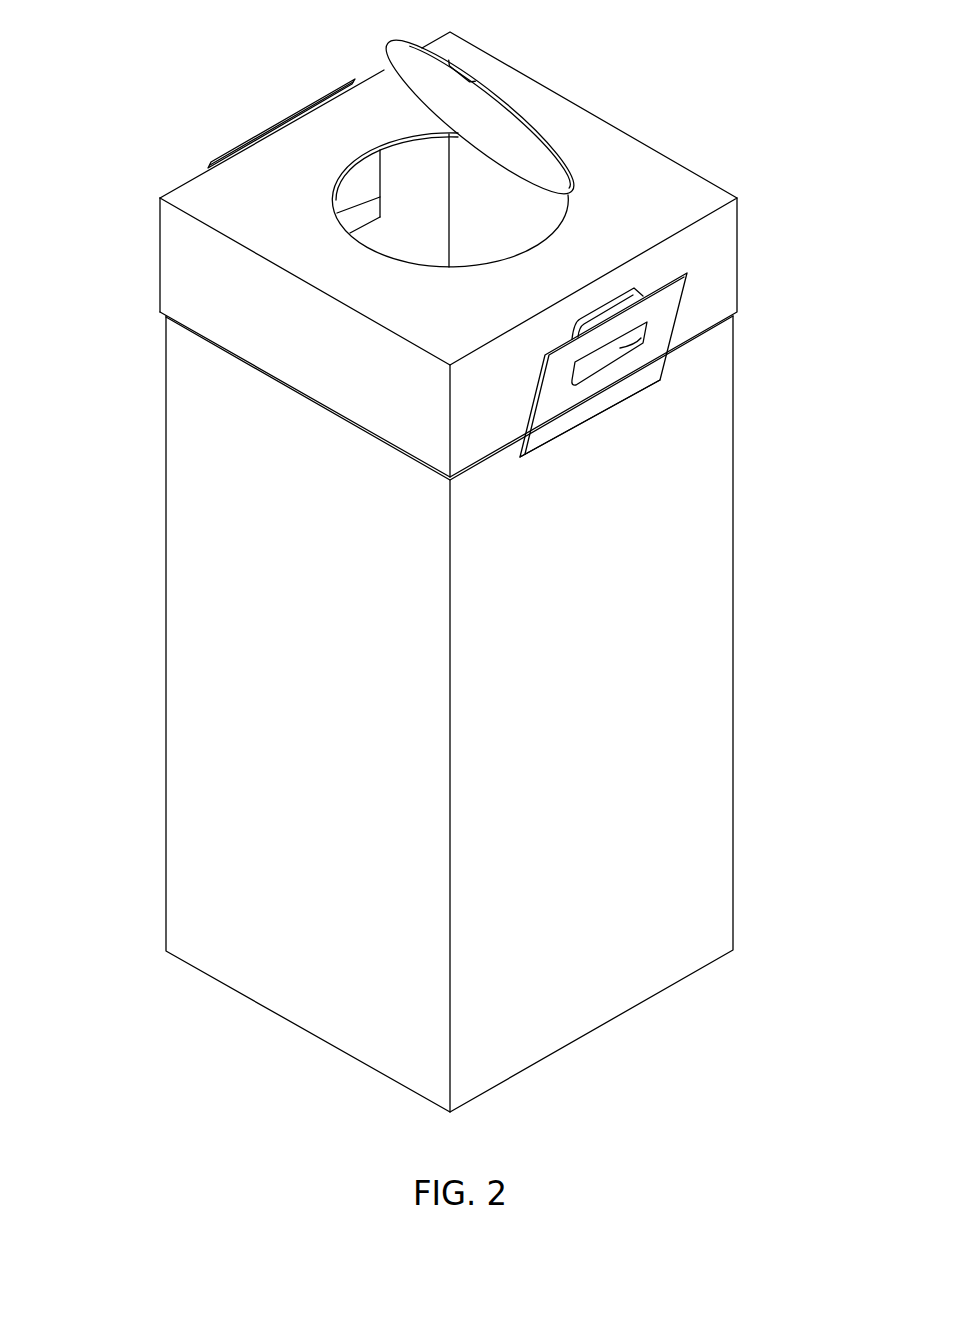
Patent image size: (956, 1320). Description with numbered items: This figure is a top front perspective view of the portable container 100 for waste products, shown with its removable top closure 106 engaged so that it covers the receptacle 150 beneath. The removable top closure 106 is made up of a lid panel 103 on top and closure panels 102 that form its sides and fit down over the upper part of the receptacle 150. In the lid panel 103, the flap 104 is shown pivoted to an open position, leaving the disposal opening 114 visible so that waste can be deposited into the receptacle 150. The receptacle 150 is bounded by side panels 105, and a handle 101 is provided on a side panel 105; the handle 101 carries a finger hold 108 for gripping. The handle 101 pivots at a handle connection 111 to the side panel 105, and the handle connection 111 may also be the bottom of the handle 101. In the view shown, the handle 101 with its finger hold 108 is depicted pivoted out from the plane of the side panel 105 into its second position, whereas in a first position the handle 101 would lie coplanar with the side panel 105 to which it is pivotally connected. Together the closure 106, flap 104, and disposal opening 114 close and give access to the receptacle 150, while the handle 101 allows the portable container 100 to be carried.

The portable container 100 is at (140, 665).
The handle 101 is at (262, 135).
The closure panels 102 is at (726, 249).
The lid panel 103 is at (657, 188).
The flap 104 is at (503, 97).
The side panel 105 is at (192, 902).
The removable top closure 106 is at (158, 255).
The finger hold 108 is at (648, 323).
The handle connection 111 is at (583, 423).
The disposal opening 114 is at (487, 200).
The receptacle 150 is at (165, 504).